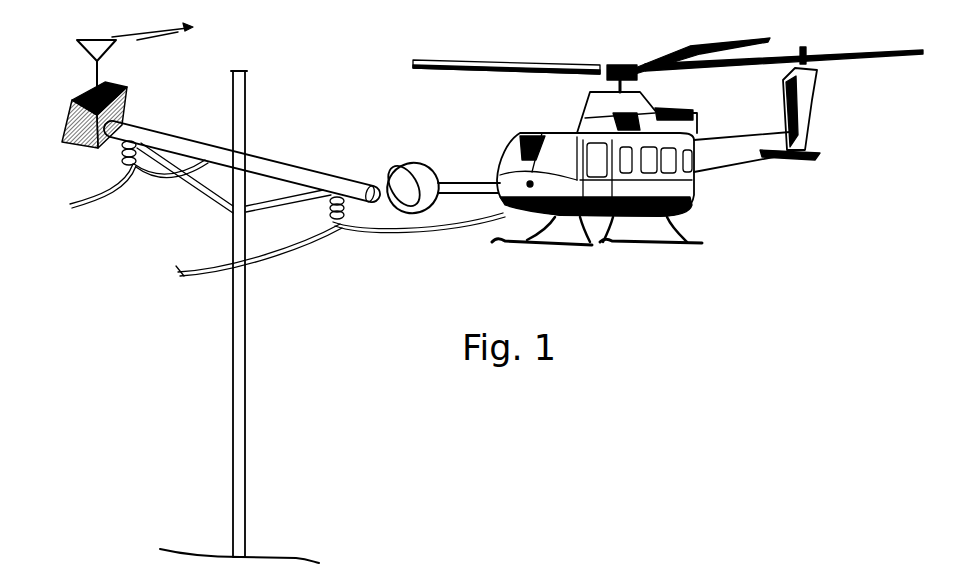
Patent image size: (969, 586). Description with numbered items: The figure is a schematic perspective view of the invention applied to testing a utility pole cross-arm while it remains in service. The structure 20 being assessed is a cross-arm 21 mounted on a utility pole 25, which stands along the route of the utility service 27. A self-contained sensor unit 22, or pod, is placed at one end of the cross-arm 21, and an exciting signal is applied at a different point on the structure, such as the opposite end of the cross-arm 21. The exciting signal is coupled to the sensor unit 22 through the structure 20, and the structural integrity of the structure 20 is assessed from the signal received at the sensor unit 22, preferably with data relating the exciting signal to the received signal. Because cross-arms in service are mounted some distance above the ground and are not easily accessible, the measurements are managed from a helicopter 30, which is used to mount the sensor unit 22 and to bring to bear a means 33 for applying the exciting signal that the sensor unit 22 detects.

The structure 20 is at (168, 355).
The cross-arm 21 is at (280, 166).
The sensor unit 22 is at (123, 110).
The utility pole 25 is at (233, 467).
The utility service 27 is at (197, 274).
The helicopter 30 is at (763, 162).
The means for applying an exciting signal 33 is at (426, 183).